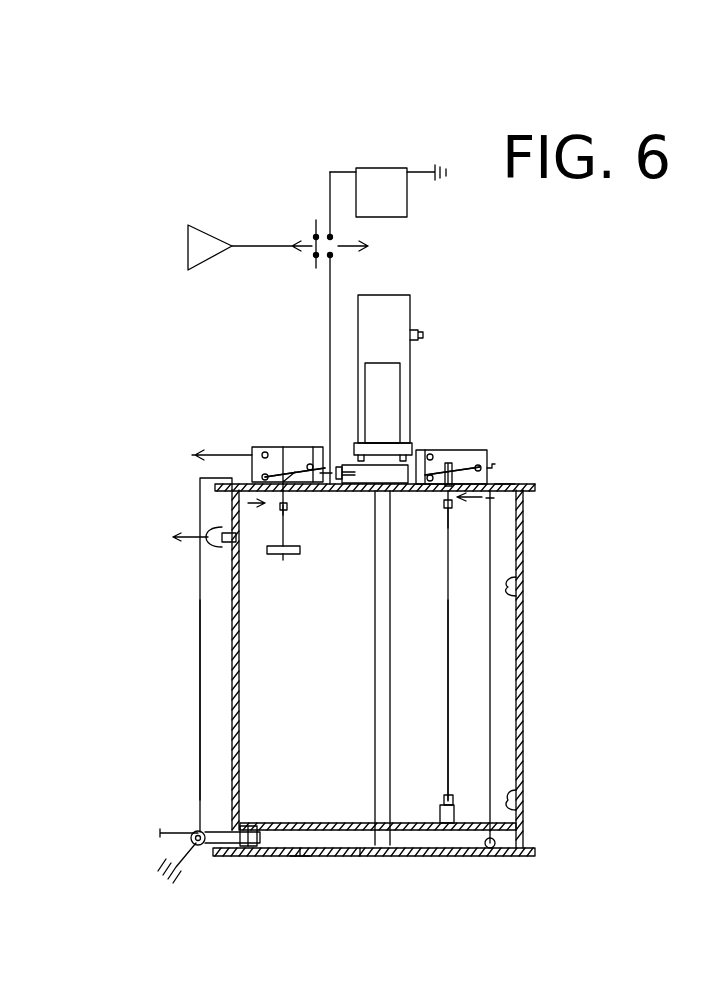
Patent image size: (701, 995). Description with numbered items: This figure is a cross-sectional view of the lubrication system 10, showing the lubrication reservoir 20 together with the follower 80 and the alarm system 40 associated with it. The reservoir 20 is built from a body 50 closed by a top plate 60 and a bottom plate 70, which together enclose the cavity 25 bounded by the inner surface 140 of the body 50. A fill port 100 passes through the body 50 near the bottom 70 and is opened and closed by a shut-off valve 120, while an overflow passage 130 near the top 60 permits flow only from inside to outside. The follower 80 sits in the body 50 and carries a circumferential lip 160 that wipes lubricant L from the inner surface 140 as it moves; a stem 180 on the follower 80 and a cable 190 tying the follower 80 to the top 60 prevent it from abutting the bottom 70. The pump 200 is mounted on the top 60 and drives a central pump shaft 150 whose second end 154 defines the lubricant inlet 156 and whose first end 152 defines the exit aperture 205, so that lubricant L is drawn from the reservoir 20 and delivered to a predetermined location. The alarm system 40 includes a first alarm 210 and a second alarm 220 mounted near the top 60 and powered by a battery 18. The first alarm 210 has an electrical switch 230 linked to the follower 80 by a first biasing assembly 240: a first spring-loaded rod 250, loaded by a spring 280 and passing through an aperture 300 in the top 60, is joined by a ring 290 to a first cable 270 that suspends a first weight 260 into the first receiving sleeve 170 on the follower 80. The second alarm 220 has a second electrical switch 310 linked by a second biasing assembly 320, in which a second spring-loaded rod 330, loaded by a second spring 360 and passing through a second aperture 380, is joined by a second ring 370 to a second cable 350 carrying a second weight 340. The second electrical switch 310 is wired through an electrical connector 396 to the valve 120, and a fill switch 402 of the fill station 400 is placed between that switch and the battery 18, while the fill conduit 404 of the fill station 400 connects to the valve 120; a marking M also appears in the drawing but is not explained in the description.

The lubrication system 10 is at (114, 272).
The battery 18 is at (381, 178).
The lubrication reservoir 20 is at (130, 633).
The cavity 25 is at (260, 779).
The alarm system 40 is at (295, 437).
The body 50 is at (524, 545).
The top plate 60 is at (533, 483).
The bottom plate 70 is at (535, 857).
The follower 80 is at (415, 835).
The fill port 100 is at (224, 845).
The shut-off valve 120 is at (196, 835).
The overflow passage 130 is at (223, 543).
The inner surface 140 is at (517, 597).
The central pump shaft 150 is at (376, 716).
The first end 152 is at (418, 473).
The second end 154 is at (367, 810).
The lubricant inlet 156 is at (368, 856).
The circumferential lip 160 is at (523, 794).
The first receiving sleeve 170 is at (457, 826).
The stem 180 is at (482, 838).
The cable 190 is at (490, 634).
The pump 200 is at (397, 311).
The exit aperture 205 is at (343, 455).
The first alarm 210 is at (464, 448).
The second alarm 220 is at (263, 458).
The electrical switch 230 is at (484, 462).
The first biasing assembly 240 is at (456, 503).
The first spring-loaded rod 250 is at (455, 504).
The first weight 260 is at (452, 800).
The first cable 270 is at (450, 698).
The spring 280 is at (503, 483).
The ring 290 is at (453, 505).
The aperture 300 is at (443, 498).
The second electrical switch 310 is at (277, 447).
The second biasing assembly 320 is at (280, 505).
The second spring-loaded rod 330 is at (278, 510).
The second weight 340 is at (283, 556).
The second cable 350 is at (290, 530).
The second spring 360 is at (285, 485).
The second ring 370 is at (282, 512).
The second aperture 380 is at (290, 467).
The electrical connector 396 is at (200, 655).
The fill station 400 is at (212, 230).
The fill switch 402 is at (318, 223).
The fill conduit 404 is at (166, 835).
The ground reference M is at (180, 869).
The lubricant L is at (300, 858).